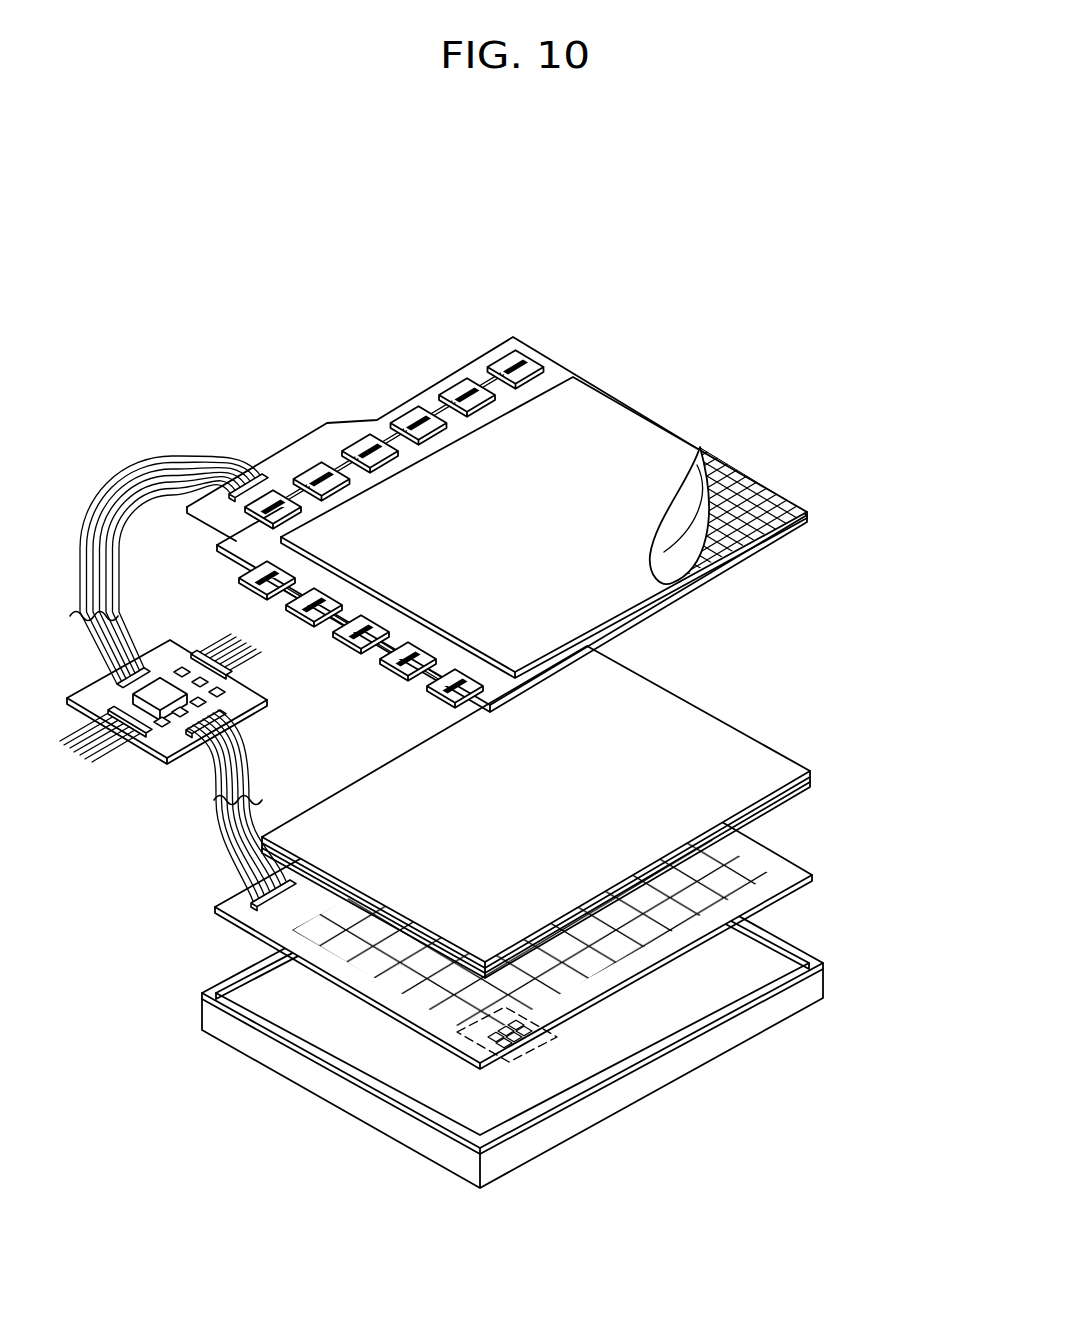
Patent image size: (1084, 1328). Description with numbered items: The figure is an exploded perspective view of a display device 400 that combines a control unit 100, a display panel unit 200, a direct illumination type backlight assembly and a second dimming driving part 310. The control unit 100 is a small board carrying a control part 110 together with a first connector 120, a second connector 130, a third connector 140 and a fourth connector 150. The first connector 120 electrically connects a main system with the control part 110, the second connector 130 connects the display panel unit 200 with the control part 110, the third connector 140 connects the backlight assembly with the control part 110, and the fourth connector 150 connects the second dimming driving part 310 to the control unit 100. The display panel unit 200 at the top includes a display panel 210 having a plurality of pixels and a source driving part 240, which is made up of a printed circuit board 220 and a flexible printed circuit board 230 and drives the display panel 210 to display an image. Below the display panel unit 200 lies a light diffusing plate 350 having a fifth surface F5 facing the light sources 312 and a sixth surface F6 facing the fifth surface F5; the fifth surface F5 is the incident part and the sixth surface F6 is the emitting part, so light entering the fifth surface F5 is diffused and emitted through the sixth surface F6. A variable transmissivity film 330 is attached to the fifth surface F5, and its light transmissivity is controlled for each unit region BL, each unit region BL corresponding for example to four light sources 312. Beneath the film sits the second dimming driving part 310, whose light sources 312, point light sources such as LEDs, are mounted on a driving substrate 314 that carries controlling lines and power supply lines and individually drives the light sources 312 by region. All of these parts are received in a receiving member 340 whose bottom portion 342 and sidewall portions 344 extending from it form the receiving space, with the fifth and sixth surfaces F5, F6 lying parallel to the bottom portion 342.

The display device 400 is at (331, 326).
The display panel unit 200 is at (497, 457).
The display panel 210 is at (683, 503).
The printed circuit board 220 is at (497, 474).
The flexible printed circuit board 230 is at (512, 357).
The source driving part 240 is at (402, 472).
The control unit 100 is at (197, 660).
The control part 110 is at (167, 679).
The first connector 120 is at (105, 760).
The second connector 130 is at (150, 470).
The third connector 140 is at (263, 669).
The fourth connector 150 is at (252, 753).
The light diffusing plate 350 is at (597, 812).
The sixth surface F6 is at (726, 770).
The fifth surface F5 is at (812, 776).
The variable transmissivity film 330 is at (783, 803).
The second dimming driving part 310 is at (513, 978).
The light source 312 is at (467, 1003).
The driving substrate 314 is at (403, 1005).
The unit region BL is at (477, 1060).
The receiving member 340 is at (512, 1011).
The bottom portion 342 is at (510, 1118).
The sidewall portion 344 is at (513, 1152).